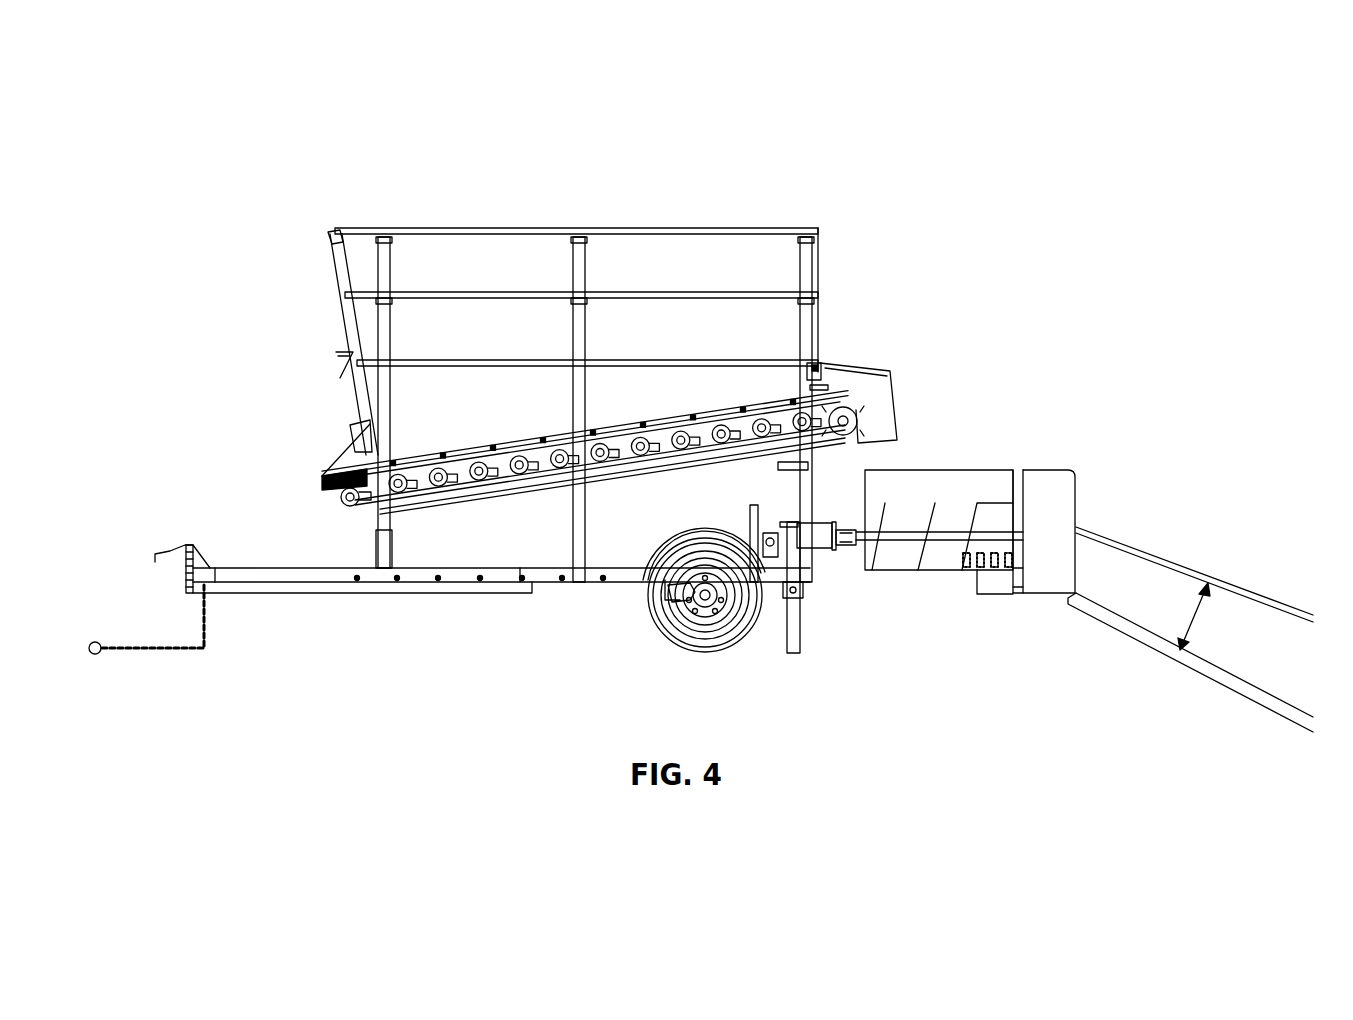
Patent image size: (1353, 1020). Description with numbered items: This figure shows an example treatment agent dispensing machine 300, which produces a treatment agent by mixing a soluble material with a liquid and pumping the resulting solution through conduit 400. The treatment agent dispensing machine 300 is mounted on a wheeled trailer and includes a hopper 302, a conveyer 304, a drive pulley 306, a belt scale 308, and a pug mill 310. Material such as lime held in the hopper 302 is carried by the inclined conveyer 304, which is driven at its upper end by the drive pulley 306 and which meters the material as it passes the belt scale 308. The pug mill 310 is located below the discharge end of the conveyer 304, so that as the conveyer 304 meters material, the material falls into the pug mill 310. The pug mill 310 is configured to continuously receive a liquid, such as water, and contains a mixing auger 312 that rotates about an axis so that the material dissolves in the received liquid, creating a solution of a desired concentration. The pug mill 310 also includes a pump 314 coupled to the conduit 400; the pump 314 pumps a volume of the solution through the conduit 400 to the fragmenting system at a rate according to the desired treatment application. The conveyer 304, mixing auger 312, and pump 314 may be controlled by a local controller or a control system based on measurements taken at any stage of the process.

The treatment agent dispensing machine 300 is at (993, 128).
The hopper 302 is at (600, 228).
The conveyer 304 is at (430, 454).
The drive pulley 306 is at (848, 410).
The belt scale 308 is at (900, 415).
The pug mill 310 is at (955, 470).
The mixing auger 312 is at (928, 548).
The pump 314 is at (1075, 470).
The conduit 400 is at (1195, 617).